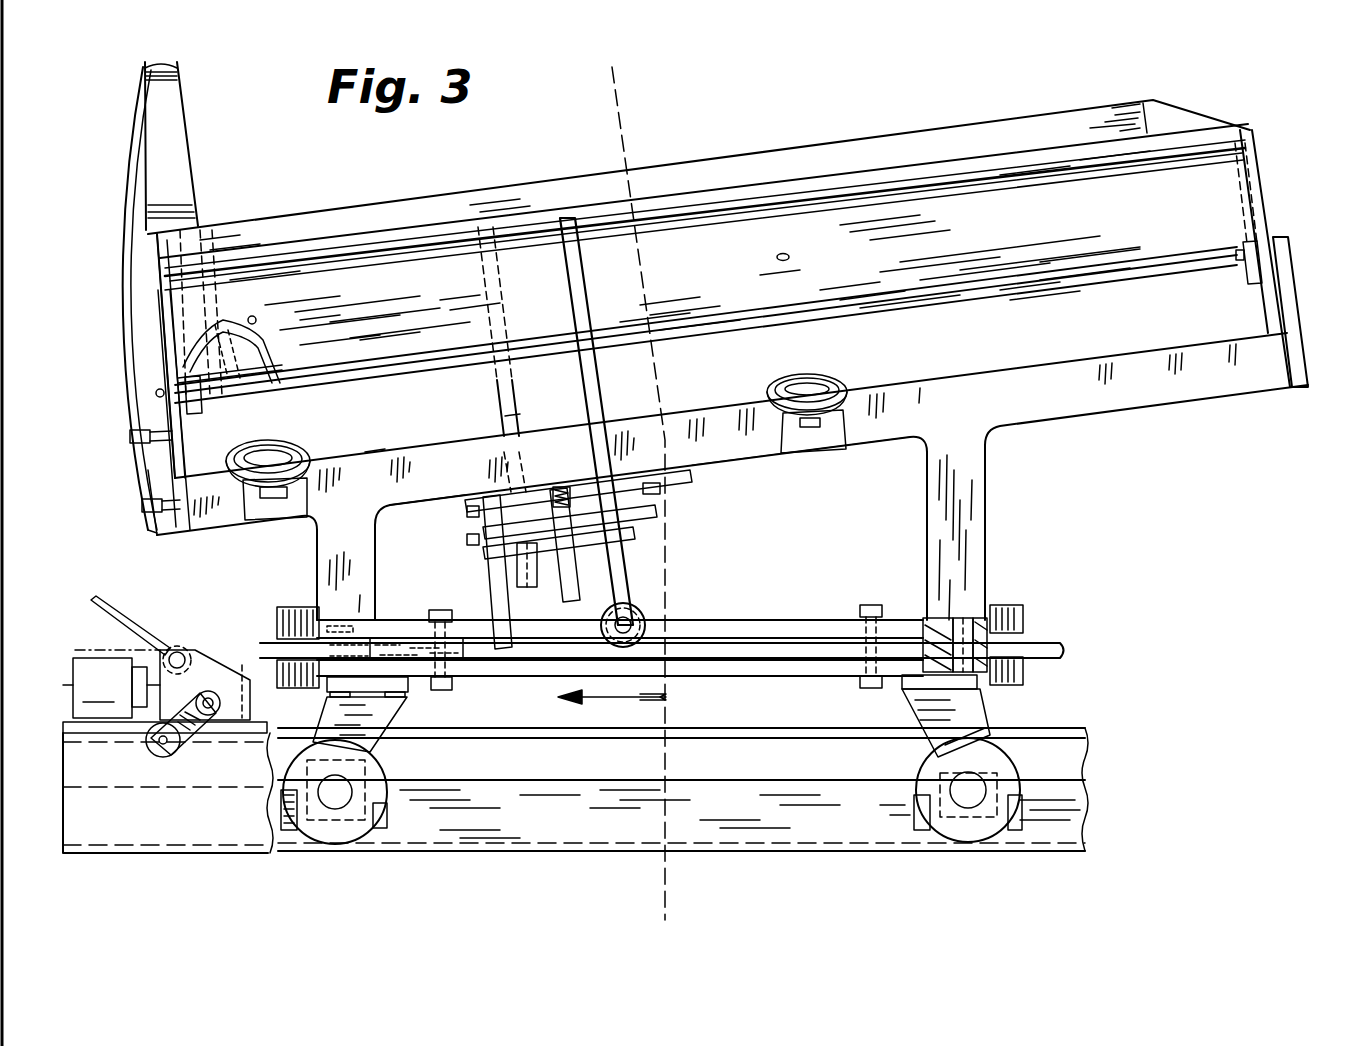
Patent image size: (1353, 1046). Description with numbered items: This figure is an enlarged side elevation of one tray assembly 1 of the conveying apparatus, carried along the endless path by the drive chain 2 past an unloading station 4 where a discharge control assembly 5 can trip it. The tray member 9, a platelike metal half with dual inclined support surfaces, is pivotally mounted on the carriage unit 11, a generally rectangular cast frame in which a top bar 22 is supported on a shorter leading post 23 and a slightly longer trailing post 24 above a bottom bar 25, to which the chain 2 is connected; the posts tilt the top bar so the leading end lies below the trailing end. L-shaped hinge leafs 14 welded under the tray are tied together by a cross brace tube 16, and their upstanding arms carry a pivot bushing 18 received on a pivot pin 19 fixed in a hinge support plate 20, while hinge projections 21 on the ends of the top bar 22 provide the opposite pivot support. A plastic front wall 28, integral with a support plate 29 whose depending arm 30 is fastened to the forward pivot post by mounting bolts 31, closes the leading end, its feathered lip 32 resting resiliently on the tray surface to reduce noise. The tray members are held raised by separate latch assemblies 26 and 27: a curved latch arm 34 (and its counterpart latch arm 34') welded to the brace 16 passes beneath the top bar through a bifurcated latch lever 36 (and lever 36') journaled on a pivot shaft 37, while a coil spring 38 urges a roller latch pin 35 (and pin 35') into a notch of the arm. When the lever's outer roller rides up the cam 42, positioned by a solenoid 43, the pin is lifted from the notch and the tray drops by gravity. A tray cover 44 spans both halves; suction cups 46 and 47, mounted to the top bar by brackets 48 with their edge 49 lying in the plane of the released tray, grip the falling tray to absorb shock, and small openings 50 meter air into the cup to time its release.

The tray assembly 1 is at (878, 128).
The drive chain 2 is at (287, 605).
The unloading station 4 is at (616, 80).
The discharge control assembly 5 is at (215, 645).
The tray member 9 is at (462, 370).
The carriage unit 11 is at (318, 538).
The hinge leaf 14 is at (168, 327).
The cross brace tube 16 is at (1048, 164).
The pivot bushing 18 is at (1248, 273).
The pivot pin 19 is at (1233, 259).
The hinge support plate 20 is at (1284, 300).
The hinge projection 21 is at (1072, 410).
The top bar 22 is at (749, 458).
The leading post 23 is at (372, 567).
The trailing post 24 is at (980, 540).
The bottom bar 25 is at (815, 618).
The latch assembly 26 is at (653, 570).
The latch assembly 27 is at (493, 572).
The front wall 28 is at (195, 172).
The support plate 29 is at (137, 142).
The depending arm 30 is at (153, 528).
The mounting bolt 31 is at (136, 447).
The feathered lip 32 is at (230, 372).
The latch arm 34 is at (605, 421).
The latch arm 34' is at (490, 421).
The roller latch pin 35 is at (594, 512).
The roller latch pin 35' is at (544, 534).
The latch lever 36 is at (665, 616).
The latch lever 36' is at (496, 582).
The pivot shaft 37 is at (662, 488).
The coil spring 38 is at (558, 490).
The cam 42 is at (100, 644).
The solenoid 43 is at (111, 684).
The tray cover 44 is at (270, 368).
The suction cup 46 is at (275, 456).
The suction cup 47 is at (817, 380).
The bracket 48 is at (290, 503).
The cup edge 49 is at (374, 452).
The small opening 50 is at (776, 258).